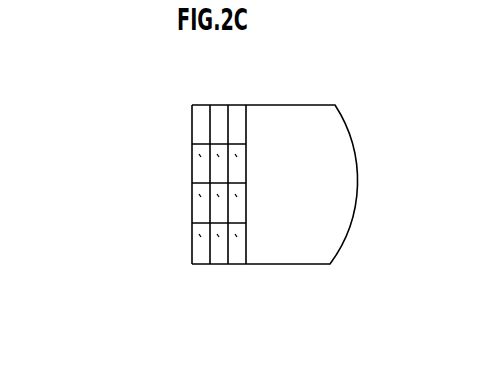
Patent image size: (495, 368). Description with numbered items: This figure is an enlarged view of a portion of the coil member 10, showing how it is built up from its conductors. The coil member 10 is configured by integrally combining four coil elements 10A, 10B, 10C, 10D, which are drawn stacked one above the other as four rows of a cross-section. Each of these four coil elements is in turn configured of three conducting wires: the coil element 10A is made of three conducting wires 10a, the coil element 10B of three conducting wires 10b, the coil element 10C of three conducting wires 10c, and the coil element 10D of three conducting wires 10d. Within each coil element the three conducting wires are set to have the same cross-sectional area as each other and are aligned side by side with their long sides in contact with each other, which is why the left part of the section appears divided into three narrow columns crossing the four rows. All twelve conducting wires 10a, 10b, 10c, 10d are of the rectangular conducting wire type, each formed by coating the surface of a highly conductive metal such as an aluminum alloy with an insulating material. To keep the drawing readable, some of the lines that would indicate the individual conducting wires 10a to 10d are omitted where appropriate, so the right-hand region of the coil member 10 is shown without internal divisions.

The coil member 10 is at (376, 188).
The conducting wires 10a is at (192, 105).
The coil element 10A is at (189, 126).
The coil element 10B is at (189, 166).
The coil element 10C is at (189, 206).
The coil element 10D is at (189, 248).
The conducting wires 10b is at (201, 157).
The conducting wires 10c is at (201, 197).
The conducting wires 10d is at (201, 237).